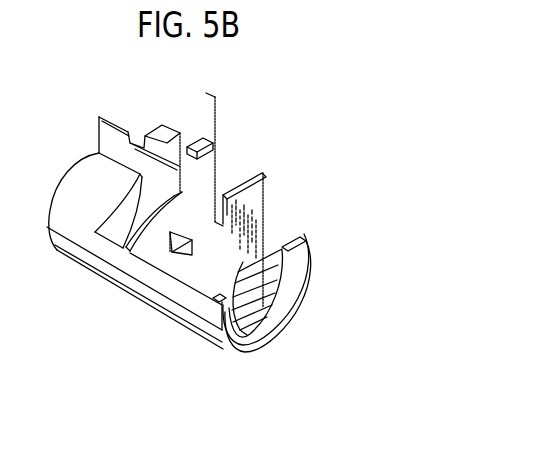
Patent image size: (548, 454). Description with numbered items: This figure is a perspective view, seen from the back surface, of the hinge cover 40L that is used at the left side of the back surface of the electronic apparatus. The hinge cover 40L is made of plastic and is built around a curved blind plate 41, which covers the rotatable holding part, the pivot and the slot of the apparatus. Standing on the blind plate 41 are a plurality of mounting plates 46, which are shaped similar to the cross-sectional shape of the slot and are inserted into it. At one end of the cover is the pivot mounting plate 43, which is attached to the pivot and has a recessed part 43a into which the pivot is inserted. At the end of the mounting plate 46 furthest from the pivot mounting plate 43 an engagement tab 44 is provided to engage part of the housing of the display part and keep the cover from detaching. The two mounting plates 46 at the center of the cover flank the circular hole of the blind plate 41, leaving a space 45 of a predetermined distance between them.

The hinge cover 40L is at (149, 316).
The blind plate 41 is at (95, 270).
The pivot mounting plate 43 is at (297, 249).
The recessed part 43a is at (238, 325).
The engagement tab 44 is at (163, 126).
The space 45 is at (223, 177).
The mounting plates 46 is at (182, 140).